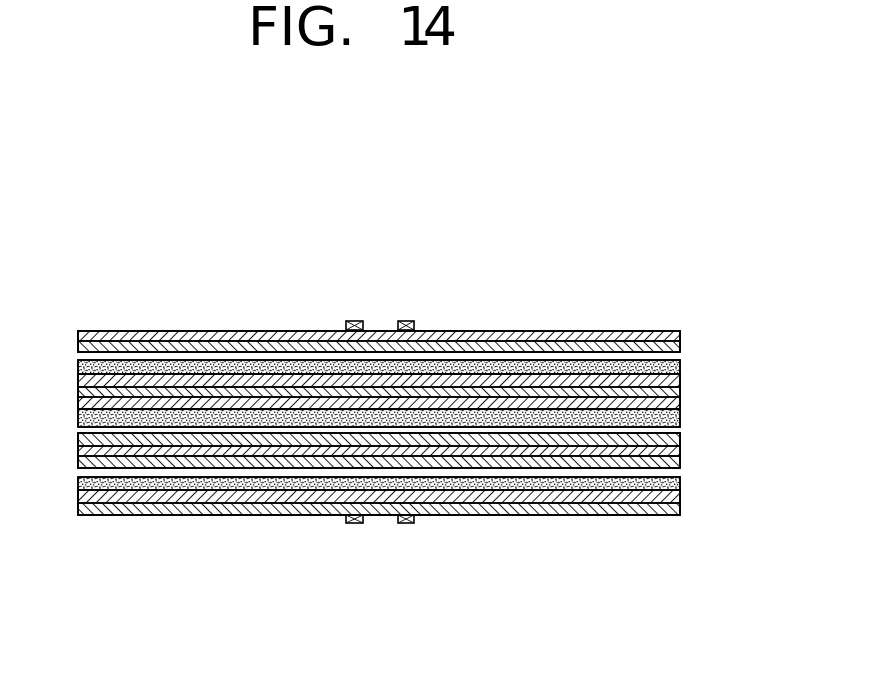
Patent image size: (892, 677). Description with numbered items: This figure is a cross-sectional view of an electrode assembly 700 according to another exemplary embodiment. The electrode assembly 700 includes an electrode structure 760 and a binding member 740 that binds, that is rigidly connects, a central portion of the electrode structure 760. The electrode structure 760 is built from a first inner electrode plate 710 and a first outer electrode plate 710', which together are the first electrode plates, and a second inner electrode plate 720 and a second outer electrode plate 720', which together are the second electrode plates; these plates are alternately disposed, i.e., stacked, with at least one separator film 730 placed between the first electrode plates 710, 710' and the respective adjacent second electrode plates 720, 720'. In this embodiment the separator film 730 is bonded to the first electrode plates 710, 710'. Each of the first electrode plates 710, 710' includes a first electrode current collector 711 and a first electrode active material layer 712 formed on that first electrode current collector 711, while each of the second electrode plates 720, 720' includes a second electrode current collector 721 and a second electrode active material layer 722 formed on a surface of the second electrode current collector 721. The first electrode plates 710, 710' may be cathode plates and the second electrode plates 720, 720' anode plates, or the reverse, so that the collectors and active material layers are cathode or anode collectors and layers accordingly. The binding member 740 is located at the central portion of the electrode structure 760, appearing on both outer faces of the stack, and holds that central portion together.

The electrode assembly 700 is at (688, 283).
The first inner electrode plate 710 is at (379, 313).
The first outer electrode plate 710' is at (379, 550).
The first electrode current collector 711 is at (201, 393).
The first electrode active material layer 712 is at (149, 378).
The second inner electrode plate 720 is at (379, 522).
The second outer electrode plate 720' is at (379, 284).
The second electrode current collector 721 is at (475, 335).
The second electrode active material layer 722 is at (541, 344).
The separator film 730 is at (634, 368).
The binding member 740 is at (354, 321).
The electrode structure 760 is at (66, 328).